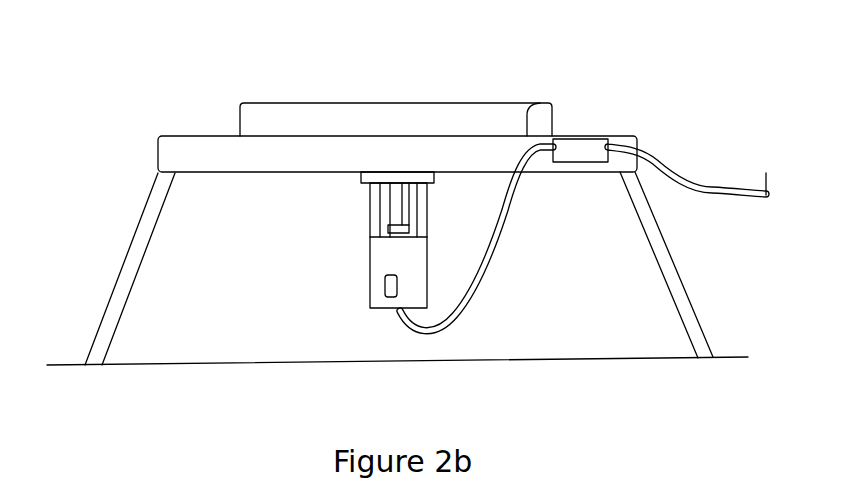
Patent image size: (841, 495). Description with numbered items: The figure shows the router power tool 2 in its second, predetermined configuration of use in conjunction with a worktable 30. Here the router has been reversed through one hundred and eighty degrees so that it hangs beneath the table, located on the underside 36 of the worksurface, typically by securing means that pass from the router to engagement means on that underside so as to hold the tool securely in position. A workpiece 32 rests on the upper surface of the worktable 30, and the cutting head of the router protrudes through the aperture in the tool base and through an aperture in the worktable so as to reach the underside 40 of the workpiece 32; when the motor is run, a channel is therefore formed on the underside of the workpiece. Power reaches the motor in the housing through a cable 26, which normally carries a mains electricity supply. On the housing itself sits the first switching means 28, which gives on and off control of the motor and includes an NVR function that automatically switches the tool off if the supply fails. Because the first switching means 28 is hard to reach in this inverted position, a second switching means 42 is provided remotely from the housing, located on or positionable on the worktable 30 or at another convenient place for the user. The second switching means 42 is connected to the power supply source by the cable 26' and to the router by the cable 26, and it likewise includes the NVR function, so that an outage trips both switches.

The router power tool 2 is at (382, 265).
The cable 26 is at (476, 245).
The cable 26' is at (704, 161).
The first switching means 28 is at (391, 297).
The worktable 30 is at (638, 137).
The workpiece 32 is at (503, 113).
The underside of the worksurface 36 is at (272, 173).
The underside of the workpiece 40 is at (533, 107).
The second switching means 42 is at (587, 148).